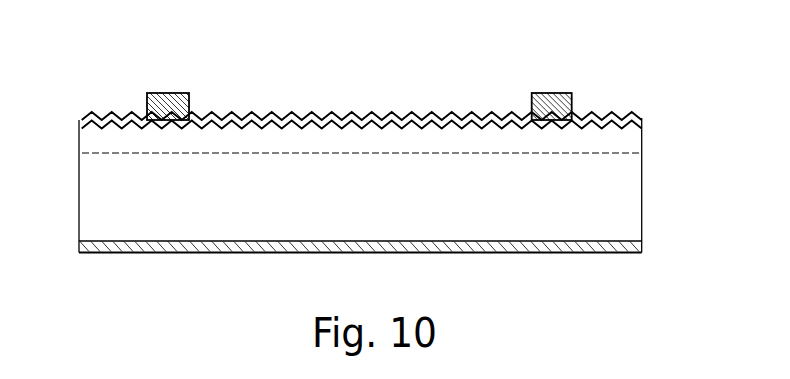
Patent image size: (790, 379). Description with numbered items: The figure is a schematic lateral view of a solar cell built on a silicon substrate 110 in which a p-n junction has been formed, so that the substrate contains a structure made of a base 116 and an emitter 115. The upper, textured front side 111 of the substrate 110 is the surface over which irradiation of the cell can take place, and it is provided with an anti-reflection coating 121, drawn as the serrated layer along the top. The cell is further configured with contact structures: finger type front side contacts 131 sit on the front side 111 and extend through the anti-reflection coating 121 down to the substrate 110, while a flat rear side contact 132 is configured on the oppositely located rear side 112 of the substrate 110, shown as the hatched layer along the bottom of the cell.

The substrate 110 is at (642, 183).
The front side 111 is at (98, 103).
The rear side 112 is at (112, 255).
The emitter 115 is at (625, 145).
The base 116 is at (618, 224).
The anti-reflection coating 121 is at (345, 117).
The front side contact 131 is at (168, 93).
The rear side contact 132 is at (533, 253).